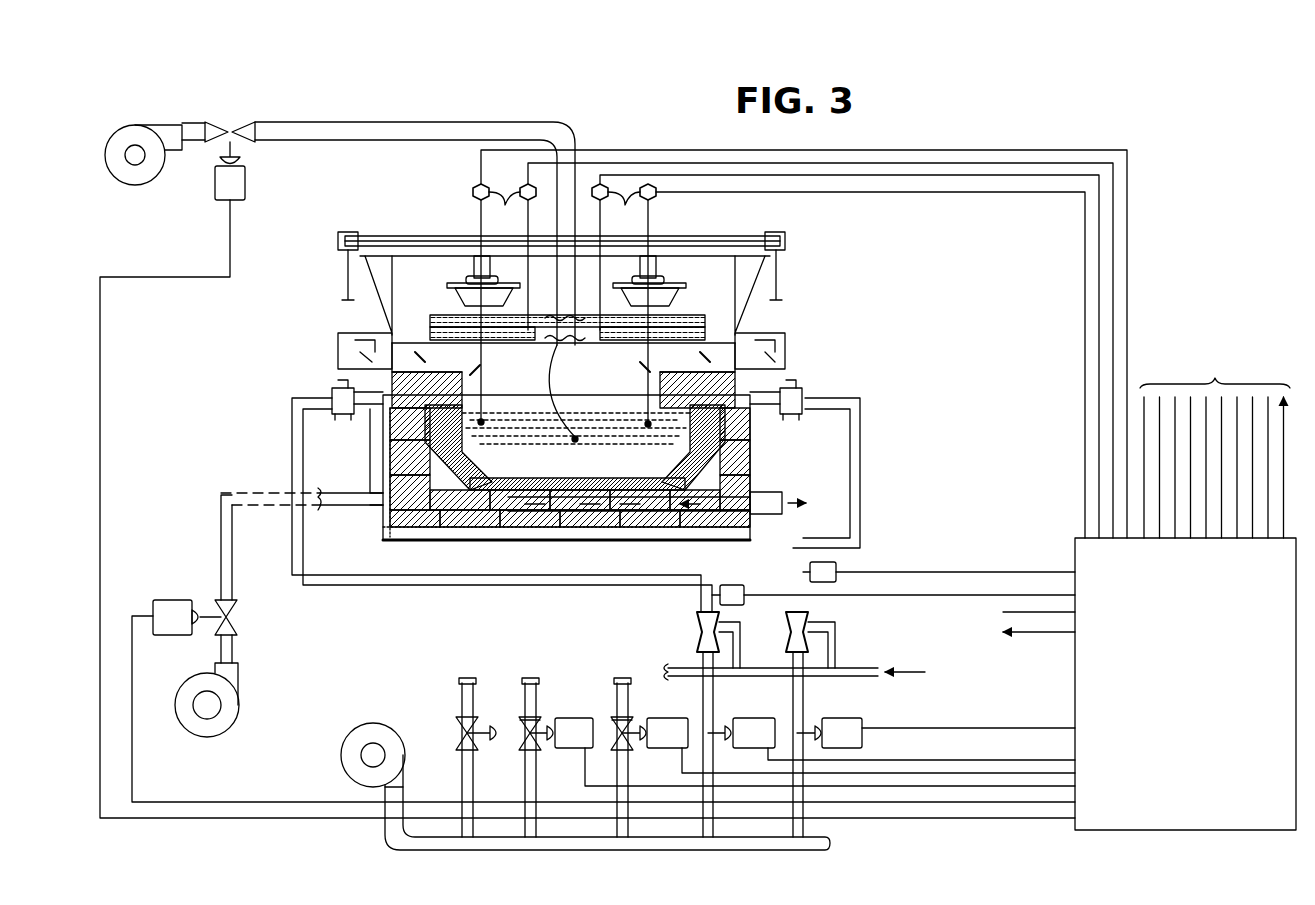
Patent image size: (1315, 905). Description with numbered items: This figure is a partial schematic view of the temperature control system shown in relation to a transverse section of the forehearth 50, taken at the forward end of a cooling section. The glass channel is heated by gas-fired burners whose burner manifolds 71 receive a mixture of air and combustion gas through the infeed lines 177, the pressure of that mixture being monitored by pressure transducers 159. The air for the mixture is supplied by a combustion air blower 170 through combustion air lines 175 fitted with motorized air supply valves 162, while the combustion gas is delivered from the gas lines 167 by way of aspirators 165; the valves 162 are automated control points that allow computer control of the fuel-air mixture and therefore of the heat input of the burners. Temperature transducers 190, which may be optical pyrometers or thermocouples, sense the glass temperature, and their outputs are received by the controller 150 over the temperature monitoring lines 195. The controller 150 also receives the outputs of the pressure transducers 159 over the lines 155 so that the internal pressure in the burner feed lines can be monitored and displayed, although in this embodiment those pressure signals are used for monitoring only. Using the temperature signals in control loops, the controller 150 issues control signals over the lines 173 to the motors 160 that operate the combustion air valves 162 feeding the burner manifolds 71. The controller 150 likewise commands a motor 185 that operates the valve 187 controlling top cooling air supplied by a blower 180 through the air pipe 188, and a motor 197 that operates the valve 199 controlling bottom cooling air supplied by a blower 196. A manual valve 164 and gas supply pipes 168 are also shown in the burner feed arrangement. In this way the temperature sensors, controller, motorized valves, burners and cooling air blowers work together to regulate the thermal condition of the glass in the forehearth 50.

The forehearth 50 is at (814, 305).
The burner manifolds 71 is at (330, 392).
The controller 150 is at (1196, 636).
The lines 155 is at (1040, 633).
The pressure transducers 159 is at (745, 585).
The motors 160 is at (585, 688).
The motorized air supply valves 162 is at (518, 720).
The manual valve 164 is at (455, 730).
The aspirators 165 is at (775, 630).
The gas lines 167 is at (878, 676).
The gas supply pipe 168 is at (622, 683).
The combustion air blower 170 is at (345, 760).
The control lines 173 is at (945, 800).
The combustion air lines 175 is at (826, 843).
The infeed lines 177 is at (292, 430).
The blower 180 is at (150, 115).
The motor 185 is at (214, 200).
The valve 187 is at (257, 130).
The air pipe 188 is at (440, 122).
The temperature transducers 190 is at (800, 344).
The temperature monitoring lines 195 is at (1113, 320).
The blower 196 is at (230, 708).
The motor 197 is at (165, 605).
The valve 199 is at (240, 622).